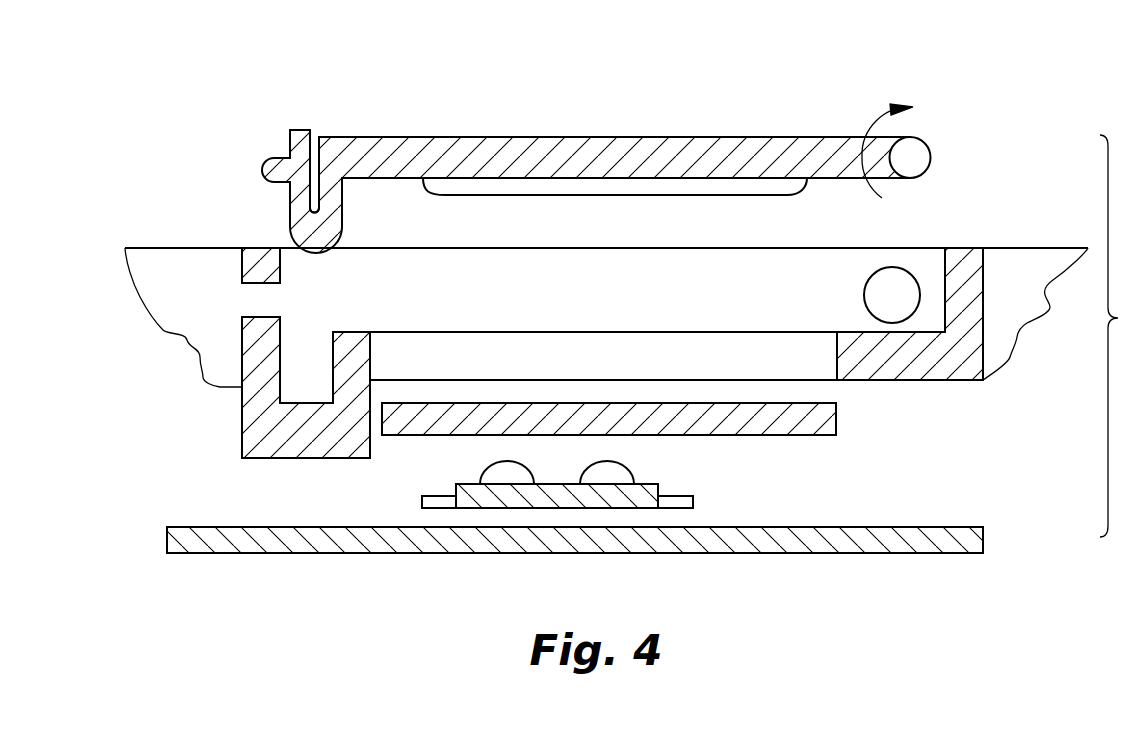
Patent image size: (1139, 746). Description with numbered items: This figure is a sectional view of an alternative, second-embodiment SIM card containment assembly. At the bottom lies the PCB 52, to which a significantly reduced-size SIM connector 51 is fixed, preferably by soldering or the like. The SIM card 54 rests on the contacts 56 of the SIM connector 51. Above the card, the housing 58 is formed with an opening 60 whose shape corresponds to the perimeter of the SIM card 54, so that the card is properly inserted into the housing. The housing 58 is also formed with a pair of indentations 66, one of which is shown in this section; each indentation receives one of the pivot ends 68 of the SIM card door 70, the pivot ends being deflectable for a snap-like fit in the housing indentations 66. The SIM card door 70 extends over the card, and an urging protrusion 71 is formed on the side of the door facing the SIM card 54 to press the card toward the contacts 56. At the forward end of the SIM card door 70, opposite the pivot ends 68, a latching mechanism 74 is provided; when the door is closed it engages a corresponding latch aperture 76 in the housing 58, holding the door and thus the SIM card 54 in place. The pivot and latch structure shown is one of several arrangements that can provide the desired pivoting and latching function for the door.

The SIM connector 51 is at (677, 495).
The PCB 52 is at (930, 527).
The SIM card 54 is at (835, 417).
The contacts 56 is at (600, 470).
The housing 58 is at (965, 252).
The opening 60 is at (640, 330).
The indentations 66 is at (898, 278).
The pivot ends 68 is at (922, 152).
The SIM card door 70 is at (598, 137).
The urging protrusion 71 is at (615, 190).
The latching mechanism 74 is at (302, 134).
The latch aperture 76 is at (257, 302).